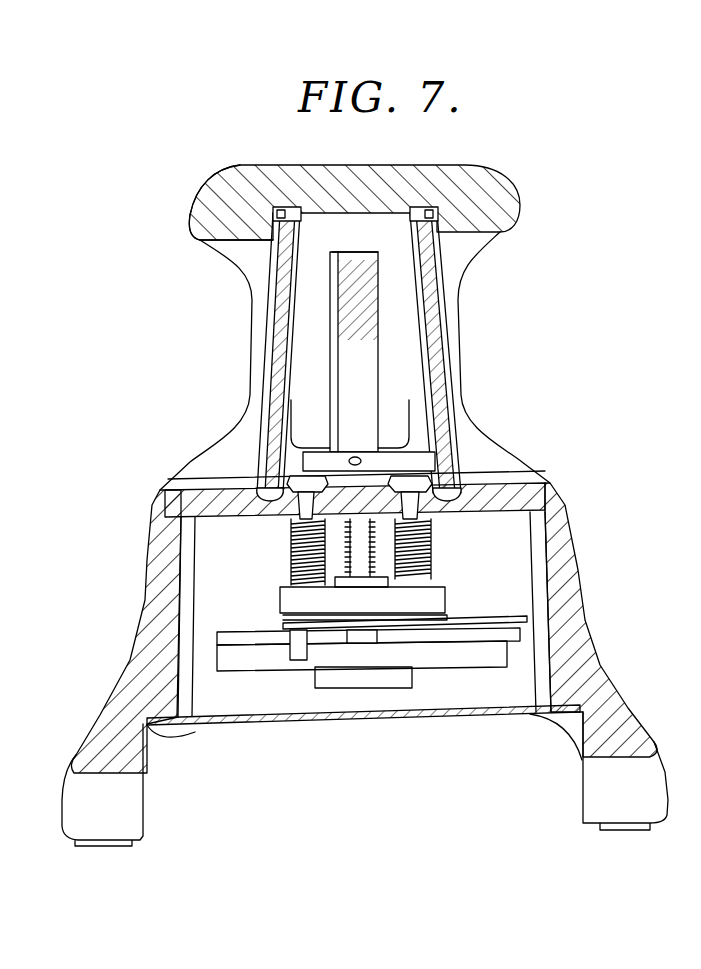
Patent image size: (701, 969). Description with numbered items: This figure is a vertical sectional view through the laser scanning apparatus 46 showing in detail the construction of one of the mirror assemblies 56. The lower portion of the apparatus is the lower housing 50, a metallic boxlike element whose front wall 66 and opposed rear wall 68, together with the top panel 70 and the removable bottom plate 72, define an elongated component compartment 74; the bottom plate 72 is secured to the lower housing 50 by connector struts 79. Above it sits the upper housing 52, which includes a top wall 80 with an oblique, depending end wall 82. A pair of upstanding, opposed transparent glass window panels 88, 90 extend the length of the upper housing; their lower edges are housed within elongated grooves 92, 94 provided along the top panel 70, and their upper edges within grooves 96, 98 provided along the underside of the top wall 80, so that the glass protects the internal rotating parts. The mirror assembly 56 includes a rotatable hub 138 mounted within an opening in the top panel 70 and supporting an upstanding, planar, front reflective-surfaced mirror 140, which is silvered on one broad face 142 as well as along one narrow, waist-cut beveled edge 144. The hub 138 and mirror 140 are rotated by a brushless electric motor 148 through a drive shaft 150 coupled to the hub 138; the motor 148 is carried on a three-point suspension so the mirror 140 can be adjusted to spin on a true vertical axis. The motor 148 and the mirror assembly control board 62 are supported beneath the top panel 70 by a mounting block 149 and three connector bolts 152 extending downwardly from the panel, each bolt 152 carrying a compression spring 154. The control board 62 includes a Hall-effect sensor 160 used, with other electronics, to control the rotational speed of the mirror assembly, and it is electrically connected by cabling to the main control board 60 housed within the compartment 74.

The apparatus 46 is at (566, 176).
The lower housing 50 is at (640, 669).
The upper housing 52 is at (504, 166).
The mirror assembly 56 is at (378, 238).
The main control board 60 is at (368, 700).
The mirror assembly control board 62 is at (516, 604).
The front wall 66 is at (130, 677).
The rear wall 68 is at (592, 630).
The top panel 70 is at (517, 483).
The bottom plate 72 is at (437, 713).
The component compartment 74 is at (405, 681).
The connector struts 79 is at (180, 688).
The top wall 80 is at (240, 195).
The end wall 82 is at (462, 310).
The glass window panel 88 is at (275, 332).
The glass window panel 90 is at (450, 370).
The groove 92 is at (260, 497).
The groove 94 is at (457, 493).
The groove 96 is at (288, 212).
The groove 98 is at (425, 212).
The rotatable hub 138 is at (403, 462).
The mirror 140 is at (358, 250).
The broad face 142 is at (367, 363).
The beveled edge 144 is at (337, 377).
The brushless electric motor 148 is at (250, 667).
The mounting block 149 is at (280, 600).
The drive shaft 150 is at (362, 553).
The connector bolts 152 is at (292, 538).
The compression spring 154 is at (430, 573).
The Hall-effect sensor 160 is at (360, 643).